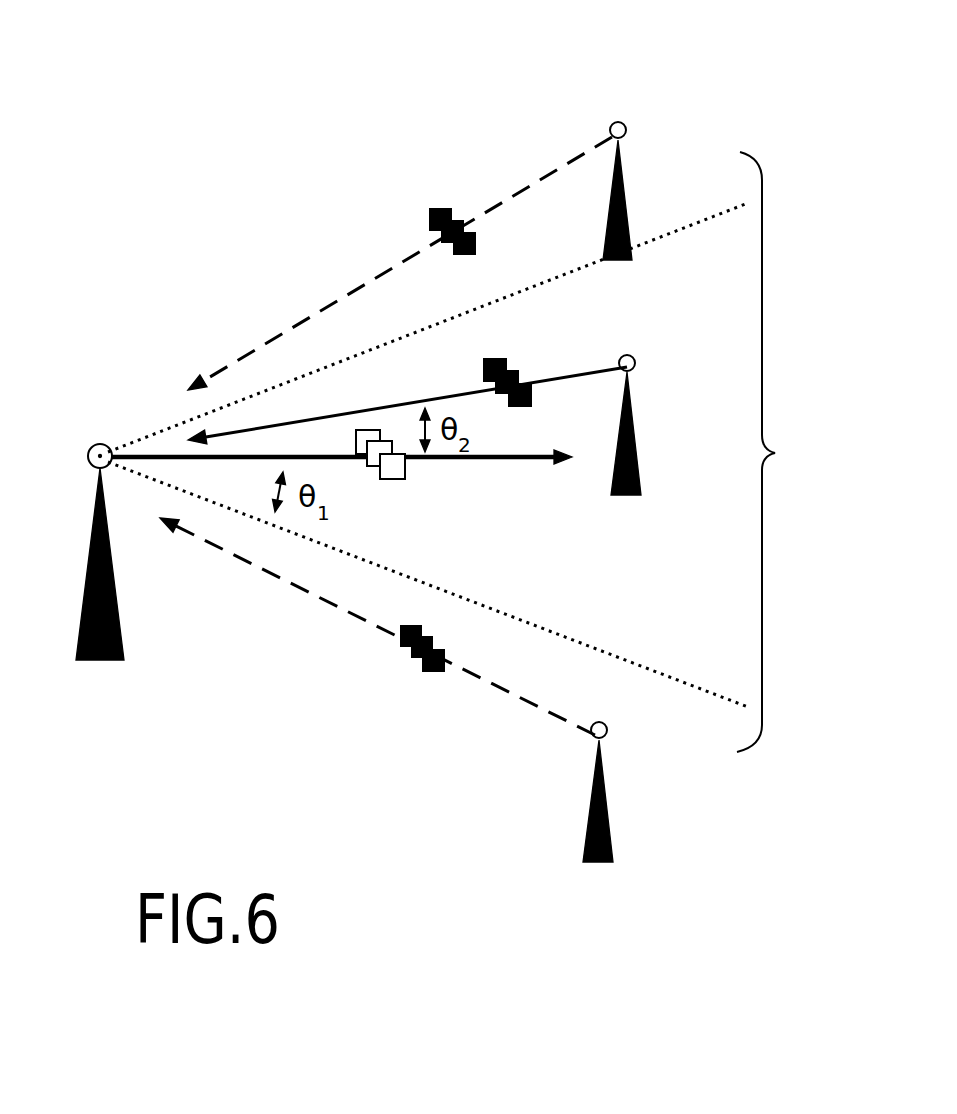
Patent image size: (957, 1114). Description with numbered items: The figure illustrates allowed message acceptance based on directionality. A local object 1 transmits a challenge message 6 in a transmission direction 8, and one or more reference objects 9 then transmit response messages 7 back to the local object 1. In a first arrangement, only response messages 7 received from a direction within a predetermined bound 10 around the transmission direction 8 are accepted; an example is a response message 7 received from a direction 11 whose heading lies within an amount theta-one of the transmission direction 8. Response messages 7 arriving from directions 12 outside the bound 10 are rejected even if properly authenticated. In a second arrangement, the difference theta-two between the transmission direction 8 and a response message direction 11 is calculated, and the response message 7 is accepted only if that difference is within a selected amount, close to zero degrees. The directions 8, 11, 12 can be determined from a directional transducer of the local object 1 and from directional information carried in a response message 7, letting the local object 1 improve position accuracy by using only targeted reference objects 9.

The local object 1 is at (97, 690).
The challenge message 6 is at (374, 519).
The response message 7 is at (517, 333).
The transmission direction 8 is at (525, 484).
The reference object 9 is at (658, 159).
The bound 10 is at (475, 452).
The response message direction 11 is at (235, 404).
The response message direction outside the bound 12 is at (276, 280).